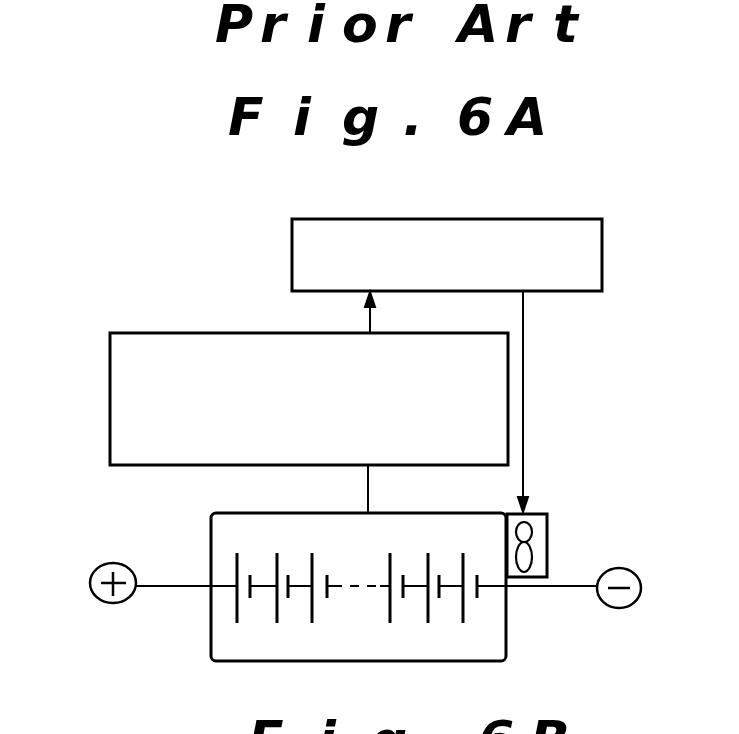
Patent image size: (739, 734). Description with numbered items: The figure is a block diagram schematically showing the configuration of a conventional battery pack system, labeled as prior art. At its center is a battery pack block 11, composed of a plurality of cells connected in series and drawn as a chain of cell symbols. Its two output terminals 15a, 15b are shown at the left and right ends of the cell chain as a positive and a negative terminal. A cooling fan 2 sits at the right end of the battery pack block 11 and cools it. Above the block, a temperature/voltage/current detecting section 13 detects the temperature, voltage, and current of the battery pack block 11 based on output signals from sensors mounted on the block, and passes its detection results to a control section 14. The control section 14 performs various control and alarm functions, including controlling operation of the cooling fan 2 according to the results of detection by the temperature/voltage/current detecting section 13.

The cooling fan 2 is at (548, 538).
The battery pack block 11 is at (239, 525).
The temperature/voltage/current detecting section 13 is at (198, 333).
The control section 14 is at (488, 220).
The output terminal 15a is at (111, 603).
The output terminal 15b is at (622, 606).